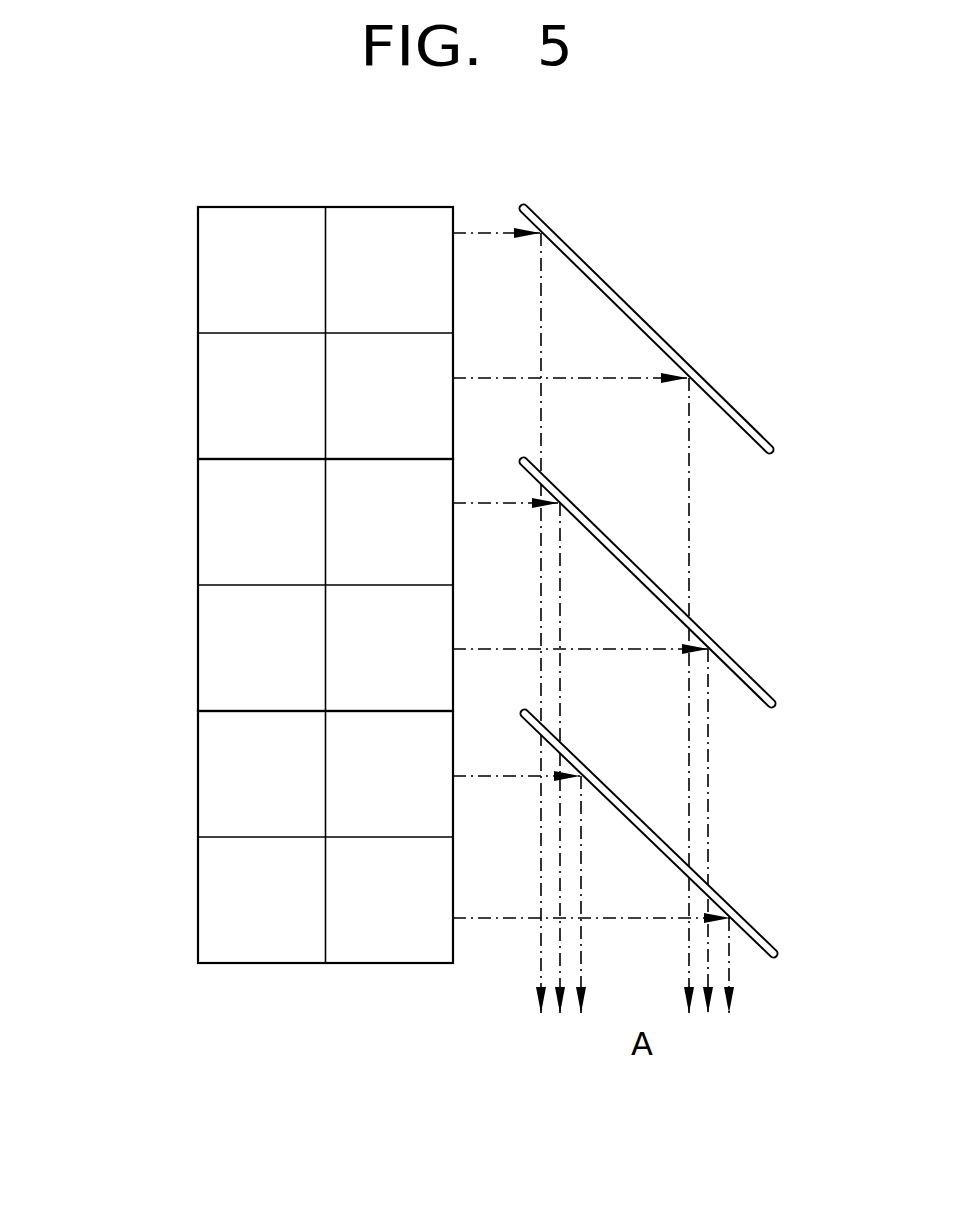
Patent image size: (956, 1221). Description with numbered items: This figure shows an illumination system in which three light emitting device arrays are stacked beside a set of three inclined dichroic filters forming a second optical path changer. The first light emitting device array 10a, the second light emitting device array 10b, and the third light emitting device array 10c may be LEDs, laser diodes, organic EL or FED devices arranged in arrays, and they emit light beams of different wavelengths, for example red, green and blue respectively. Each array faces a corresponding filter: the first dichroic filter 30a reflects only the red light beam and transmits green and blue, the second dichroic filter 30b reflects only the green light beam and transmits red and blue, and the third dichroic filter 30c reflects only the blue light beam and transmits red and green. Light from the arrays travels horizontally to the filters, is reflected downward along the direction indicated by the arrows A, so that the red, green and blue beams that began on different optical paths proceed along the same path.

The first light emitting device array 10a is at (200, 813).
The second light emitting device array 10b is at (200, 562).
The third light emitting device array 10c is at (200, 313).
The first dichroic filter 30a is at (597, 780).
The second dichroic filter 30b is at (603, 535).
The third dichroic filter 30c is at (657, 333).